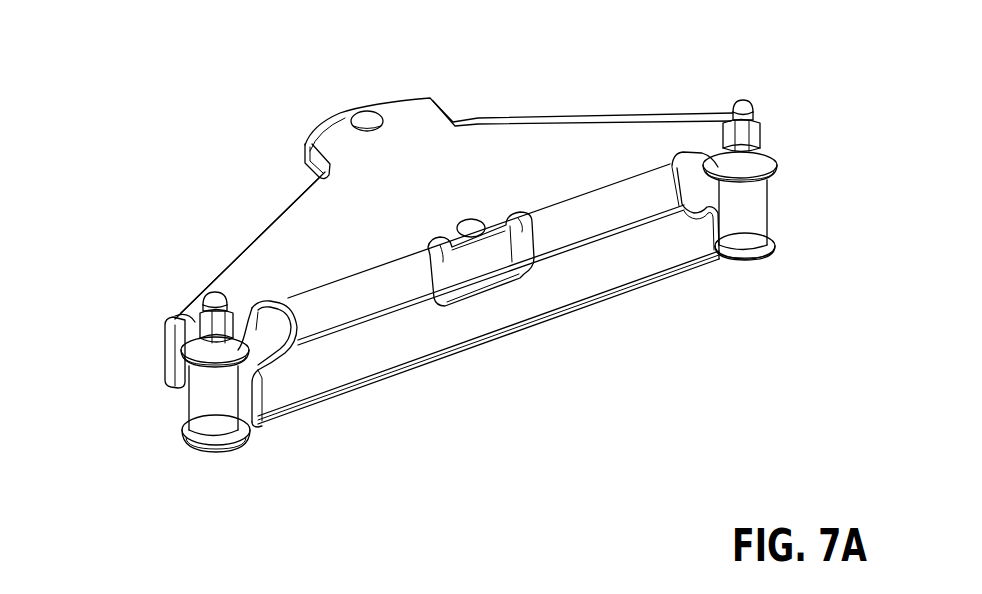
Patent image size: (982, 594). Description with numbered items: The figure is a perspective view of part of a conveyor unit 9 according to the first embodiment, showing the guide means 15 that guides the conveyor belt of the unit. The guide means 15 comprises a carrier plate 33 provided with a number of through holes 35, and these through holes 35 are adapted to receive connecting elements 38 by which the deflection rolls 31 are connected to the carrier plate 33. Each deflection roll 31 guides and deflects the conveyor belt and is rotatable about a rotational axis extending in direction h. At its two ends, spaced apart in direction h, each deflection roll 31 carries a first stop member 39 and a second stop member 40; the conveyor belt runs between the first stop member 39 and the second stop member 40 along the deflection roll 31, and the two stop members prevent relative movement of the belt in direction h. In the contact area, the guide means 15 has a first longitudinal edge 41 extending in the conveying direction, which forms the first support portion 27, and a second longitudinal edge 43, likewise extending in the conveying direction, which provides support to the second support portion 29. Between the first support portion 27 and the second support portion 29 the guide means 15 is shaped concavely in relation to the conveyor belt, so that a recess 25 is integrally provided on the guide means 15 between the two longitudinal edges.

The conveyor unit 9 is at (246, 105).
The guide means 15 is at (561, 103).
The recess 25 is at (628, 253).
The first support portion 27 is at (613, 227).
The second support portion 29 is at (513, 336).
The deflection roll 31 is at (220, 397).
The carrier plate 33 is at (352, 243).
The through hole 35 is at (366, 119).
The connecting element 38 is at (217, 300).
The first stop member 39 is at (176, 352).
The second stop member 40 is at (210, 445).
The first longitudinal edge 41 is at (287, 303).
The second longitudinal edge 43 is at (373, 387).